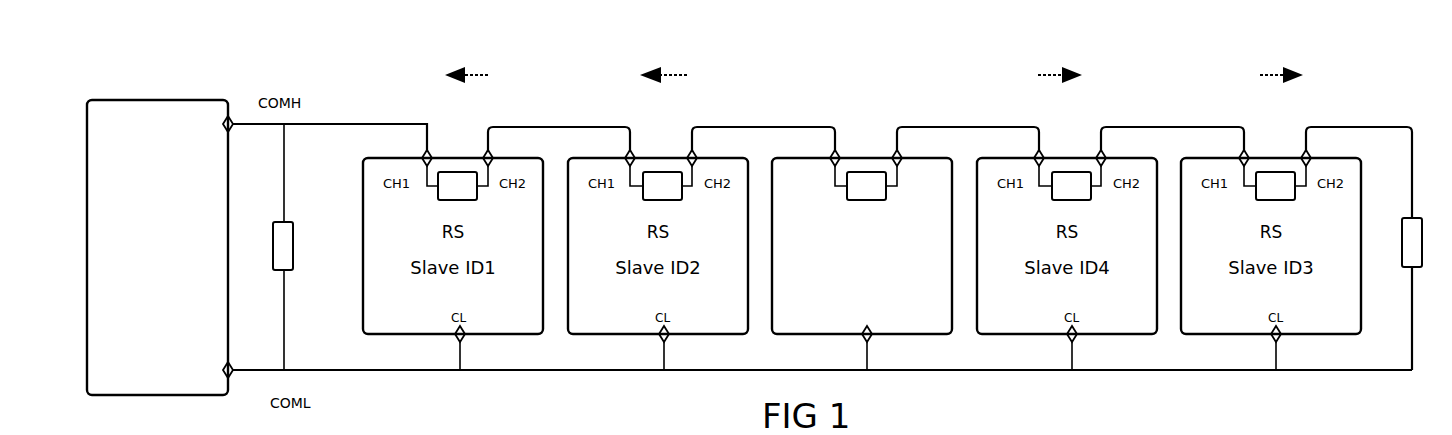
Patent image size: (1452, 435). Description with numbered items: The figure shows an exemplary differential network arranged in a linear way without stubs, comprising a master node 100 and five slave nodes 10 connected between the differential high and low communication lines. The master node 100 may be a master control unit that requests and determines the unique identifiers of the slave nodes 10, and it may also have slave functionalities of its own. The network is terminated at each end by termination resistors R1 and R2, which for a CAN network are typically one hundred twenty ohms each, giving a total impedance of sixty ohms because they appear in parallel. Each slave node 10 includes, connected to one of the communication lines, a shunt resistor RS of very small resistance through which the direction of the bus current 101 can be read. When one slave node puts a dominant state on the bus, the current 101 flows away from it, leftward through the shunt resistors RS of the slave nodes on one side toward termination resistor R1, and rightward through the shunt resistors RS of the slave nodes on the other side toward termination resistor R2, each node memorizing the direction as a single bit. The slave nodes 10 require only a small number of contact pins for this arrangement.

The master node 100 is at (165, 367).
The bus current (IBus) 101 is at (687, 72).
The slave node 10 is at (928, 311).
The termination resistor R1 is at (285, 243).
The shunt resistor RS is at (460, 187).
The termination resistor R2 is at (1417, 218).